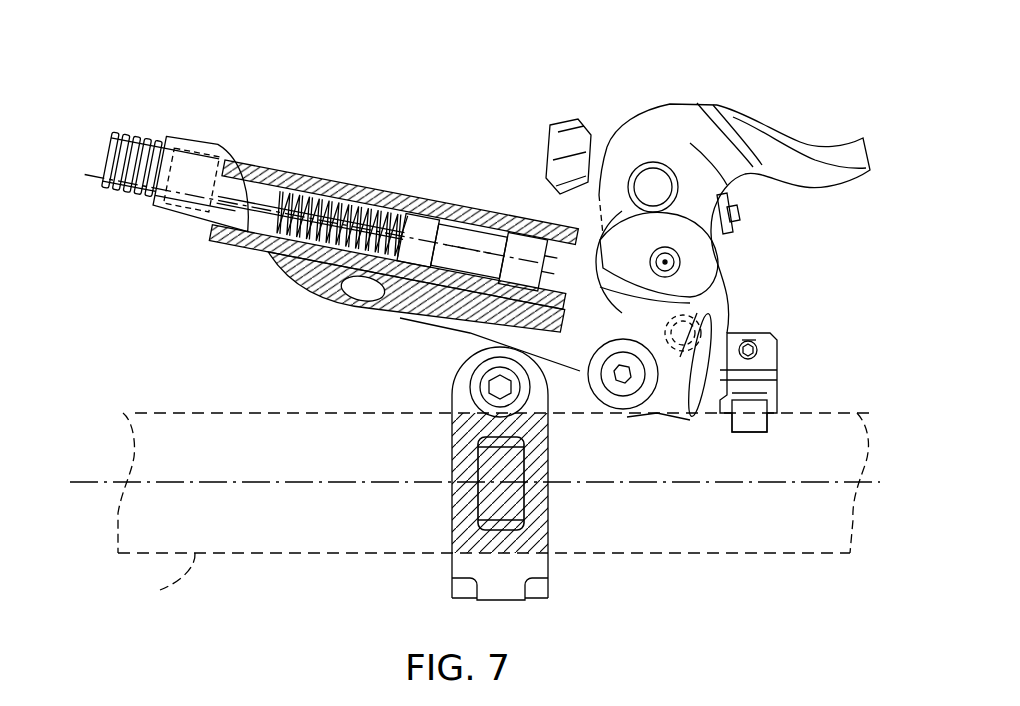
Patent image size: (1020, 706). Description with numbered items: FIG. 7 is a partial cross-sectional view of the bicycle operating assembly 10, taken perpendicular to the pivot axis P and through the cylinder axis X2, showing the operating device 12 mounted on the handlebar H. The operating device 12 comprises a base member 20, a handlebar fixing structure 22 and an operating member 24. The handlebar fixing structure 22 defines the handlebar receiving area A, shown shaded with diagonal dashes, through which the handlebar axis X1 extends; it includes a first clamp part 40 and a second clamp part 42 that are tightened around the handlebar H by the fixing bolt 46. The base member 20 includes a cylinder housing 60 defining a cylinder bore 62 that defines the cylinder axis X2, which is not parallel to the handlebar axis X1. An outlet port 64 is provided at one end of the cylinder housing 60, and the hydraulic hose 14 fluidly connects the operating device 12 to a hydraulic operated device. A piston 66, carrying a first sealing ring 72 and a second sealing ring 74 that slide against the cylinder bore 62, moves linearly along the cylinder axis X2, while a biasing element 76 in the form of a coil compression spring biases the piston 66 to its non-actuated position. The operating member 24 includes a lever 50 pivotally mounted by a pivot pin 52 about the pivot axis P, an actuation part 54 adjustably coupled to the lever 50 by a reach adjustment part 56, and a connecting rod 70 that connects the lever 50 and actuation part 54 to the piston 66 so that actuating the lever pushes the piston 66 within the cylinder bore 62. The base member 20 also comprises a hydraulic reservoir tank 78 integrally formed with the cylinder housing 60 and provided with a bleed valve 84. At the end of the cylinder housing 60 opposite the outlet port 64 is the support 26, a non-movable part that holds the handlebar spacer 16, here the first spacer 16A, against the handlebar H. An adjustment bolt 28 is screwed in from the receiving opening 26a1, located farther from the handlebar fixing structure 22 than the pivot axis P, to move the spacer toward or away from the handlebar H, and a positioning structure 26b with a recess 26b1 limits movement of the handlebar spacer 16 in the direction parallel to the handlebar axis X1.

The operating assembly 10 is at (775, 42).
The operating device 12 is at (364, 245).
The hydraulic hose 14 is at (57, 147).
The handlebar spacer 16 is at (742, 452).
The first spacer 16A is at (758, 424).
The base member 20 is at (729, 272).
The handlebar fixing structure 22 is at (485, 492).
The operating member 24 is at (800, 134).
The support 26 is at (794, 381).
The receiving opening 26a1 is at (762, 356).
The positioning structure 26b is at (718, 422).
The recess 26b1 is at (780, 400).
The adjustment bolt 28 is at (757, 342).
The first clamp part 40 is at (538, 600).
The second clamp part 42 is at (528, 566).
The fixing bolt 46 is at (470, 383).
The lever 50 is at (840, 187).
The pivot pin 52 is at (682, 262).
The actuation part 54 is at (748, 291).
The reach adjustment part 56 is at (575, 128).
The cylinder housing 60 is at (360, 185).
The cylinder bore 62 is at (312, 185).
The outlet port 64 is at (268, 230).
The piston 66 is at (471, 240).
The connecting rod 70 is at (680, 352).
The first sealing ring 72 is at (512, 252).
The second sealing ring 74 is at (425, 225).
The biasing element 76 is at (342, 250).
The hydraulic reservoir tank 78 is at (405, 322).
The bleed valve 84 is at (626, 386).
The handlebar receiving area A is at (510, 500).
The handlebar H is at (160, 590).
The pivot axis P is at (670, 256).
The handlebar axis X1 is at (94, 481).
The cylinder axis X2 is at (191, 185).